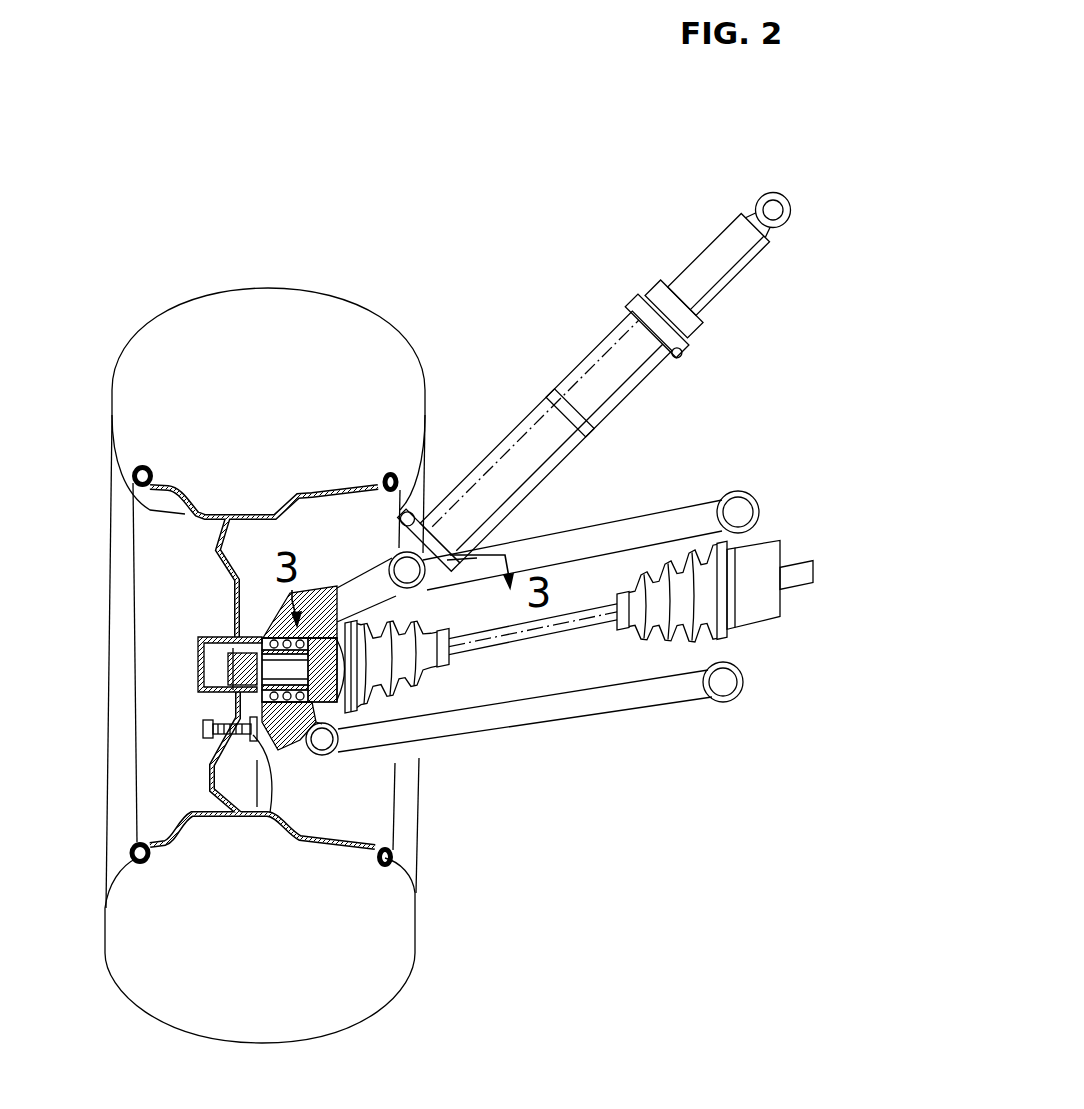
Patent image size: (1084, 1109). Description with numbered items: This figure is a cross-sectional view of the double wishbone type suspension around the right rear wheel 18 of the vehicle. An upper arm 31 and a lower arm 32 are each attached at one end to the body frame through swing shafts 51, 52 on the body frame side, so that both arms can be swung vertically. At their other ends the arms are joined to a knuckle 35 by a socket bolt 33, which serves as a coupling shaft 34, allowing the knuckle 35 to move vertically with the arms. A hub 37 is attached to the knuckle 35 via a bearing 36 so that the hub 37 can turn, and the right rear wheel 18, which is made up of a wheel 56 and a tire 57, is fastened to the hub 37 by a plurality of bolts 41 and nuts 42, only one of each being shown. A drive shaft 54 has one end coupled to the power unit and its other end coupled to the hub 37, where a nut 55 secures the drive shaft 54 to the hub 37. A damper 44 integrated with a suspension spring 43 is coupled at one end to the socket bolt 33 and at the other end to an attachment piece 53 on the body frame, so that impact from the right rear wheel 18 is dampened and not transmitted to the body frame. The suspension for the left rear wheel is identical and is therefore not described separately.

The right rear wheel 18 is at (322, 290).
The tire 57 is at (202, 297).
The wheel 56 is at (190, 513).
The nut 55 is at (198, 650).
The nut 42 is at (203, 722).
The hub 37 is at (262, 628).
The knuckle 35 is at (380, 597).
The bearing 36 is at (283, 740).
The bolt 41 is at (270, 813).
The socket bolt 33 is at (423, 587).
The coupling shaft 34 is at (330, 757).
The upper arm 31 is at (637, 513).
The lower arm 32 is at (555, 720).
The swing shaft 51 is at (745, 491).
The swing shaft 52 is at (727, 703).
The suspension spring 43 is at (613, 312).
The damper 44 is at (693, 252).
The attachment piece 53 is at (777, 193).
The drive shaft 54 is at (593, 637).